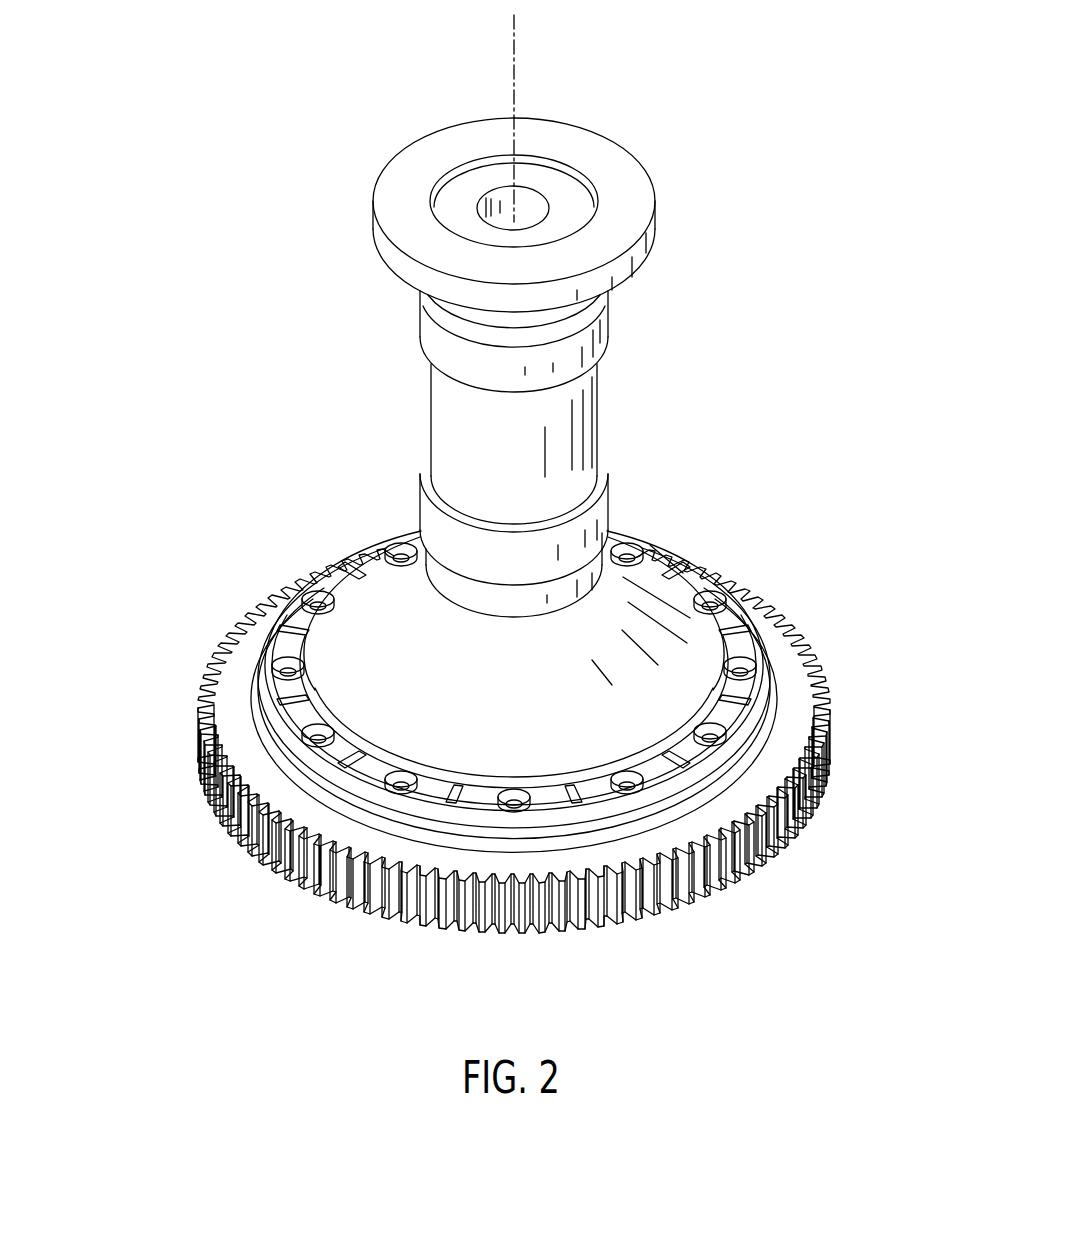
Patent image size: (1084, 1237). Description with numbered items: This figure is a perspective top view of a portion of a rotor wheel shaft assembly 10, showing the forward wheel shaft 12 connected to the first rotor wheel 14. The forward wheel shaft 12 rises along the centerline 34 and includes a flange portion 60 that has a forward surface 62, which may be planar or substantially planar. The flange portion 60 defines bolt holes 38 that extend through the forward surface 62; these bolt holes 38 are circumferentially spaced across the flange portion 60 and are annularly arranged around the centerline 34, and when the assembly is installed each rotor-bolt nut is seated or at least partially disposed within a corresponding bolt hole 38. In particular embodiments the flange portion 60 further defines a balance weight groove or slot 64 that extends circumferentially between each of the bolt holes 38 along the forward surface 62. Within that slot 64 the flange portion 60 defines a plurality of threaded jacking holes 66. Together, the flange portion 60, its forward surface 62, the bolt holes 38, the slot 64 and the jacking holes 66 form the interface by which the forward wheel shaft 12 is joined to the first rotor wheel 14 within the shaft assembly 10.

The shaft assembly 10 is at (728, 147).
The forward wheel shaft 12 is at (622, 490).
The first rotor wheel 14 is at (317, 898).
The centerline 34 is at (514, 42).
The bolt holes 38 is at (270, 653).
The flange portion 60 is at (267, 703).
The forward surface 62 is at (282, 638).
The balance weight groove or slot 64 is at (293, 703).
The threaded jacking holes 66 is at (353, 562).